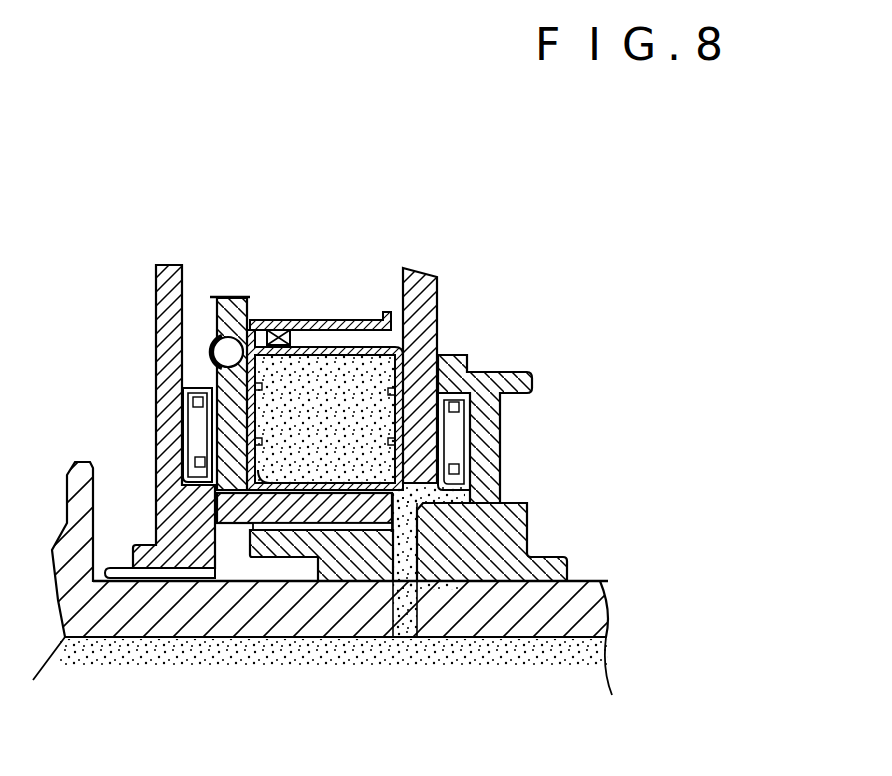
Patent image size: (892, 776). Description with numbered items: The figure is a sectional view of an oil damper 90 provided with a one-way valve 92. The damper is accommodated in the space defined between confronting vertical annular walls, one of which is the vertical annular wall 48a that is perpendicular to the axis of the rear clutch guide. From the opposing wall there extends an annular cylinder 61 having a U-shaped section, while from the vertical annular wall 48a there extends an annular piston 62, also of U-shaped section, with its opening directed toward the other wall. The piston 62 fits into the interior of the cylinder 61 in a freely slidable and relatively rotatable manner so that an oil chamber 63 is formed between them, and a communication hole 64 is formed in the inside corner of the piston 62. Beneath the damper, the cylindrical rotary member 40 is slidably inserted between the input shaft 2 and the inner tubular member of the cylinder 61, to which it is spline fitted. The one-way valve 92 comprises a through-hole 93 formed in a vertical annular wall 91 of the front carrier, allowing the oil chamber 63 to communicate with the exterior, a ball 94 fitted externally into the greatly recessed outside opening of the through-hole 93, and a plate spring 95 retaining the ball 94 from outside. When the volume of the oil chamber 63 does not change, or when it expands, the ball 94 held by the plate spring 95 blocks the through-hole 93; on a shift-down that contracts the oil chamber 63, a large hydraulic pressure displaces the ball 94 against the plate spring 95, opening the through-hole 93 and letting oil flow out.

The input shaft 2 is at (587, 615).
The cylindrical rotary member 40 is at (520, 533).
The vertical annular wall 48a is at (423, 278).
The annular cylinder 61 is at (297, 313).
The annular piston 62 is at (372, 338).
The oil chamber 63 is at (336, 400).
The communication hole 64 is at (445, 513).
The oil damper 90 is at (325, 299).
The vertical annular wall 91 is at (216, 416).
The one-way valve 92 is at (223, 357).
The through-hole 93 is at (290, 279).
The ball 94 is at (230, 296).
The plate spring 95 is at (209, 372).